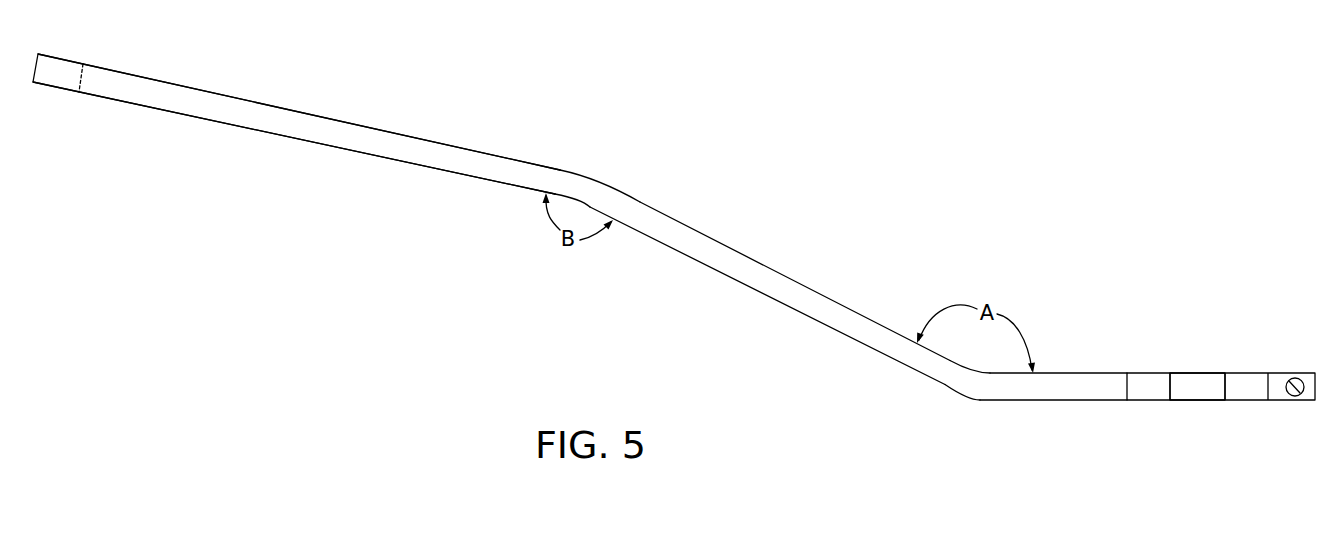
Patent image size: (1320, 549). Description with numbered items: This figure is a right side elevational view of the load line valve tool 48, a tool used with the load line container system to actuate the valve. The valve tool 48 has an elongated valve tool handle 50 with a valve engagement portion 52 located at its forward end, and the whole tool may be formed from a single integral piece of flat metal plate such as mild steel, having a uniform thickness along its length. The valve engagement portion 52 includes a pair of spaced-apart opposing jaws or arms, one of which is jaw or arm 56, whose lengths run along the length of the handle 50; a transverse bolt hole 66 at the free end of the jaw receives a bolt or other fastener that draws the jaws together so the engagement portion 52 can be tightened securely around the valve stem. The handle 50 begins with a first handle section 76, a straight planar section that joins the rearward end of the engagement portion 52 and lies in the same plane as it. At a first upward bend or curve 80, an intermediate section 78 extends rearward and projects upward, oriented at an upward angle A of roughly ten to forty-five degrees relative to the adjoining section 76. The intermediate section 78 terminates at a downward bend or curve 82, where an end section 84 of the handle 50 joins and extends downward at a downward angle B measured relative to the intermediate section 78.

The load line valve tool 48 is at (869, 172).
The valve tool handle 50 is at (288, 106).
The valve engagement portion 52 is at (1315, 414).
The jaw or arm 56 is at (1199, 384).
The bolt hole 66 is at (1292, 379).
The first handle section 76 is at (1123, 414).
The intermediate section 78 is at (565, 255).
The first upward bend or curve 80 is at (960, 402).
The downward bend or curve 82 is at (593, 176).
The end section 84 is at (565, 255).